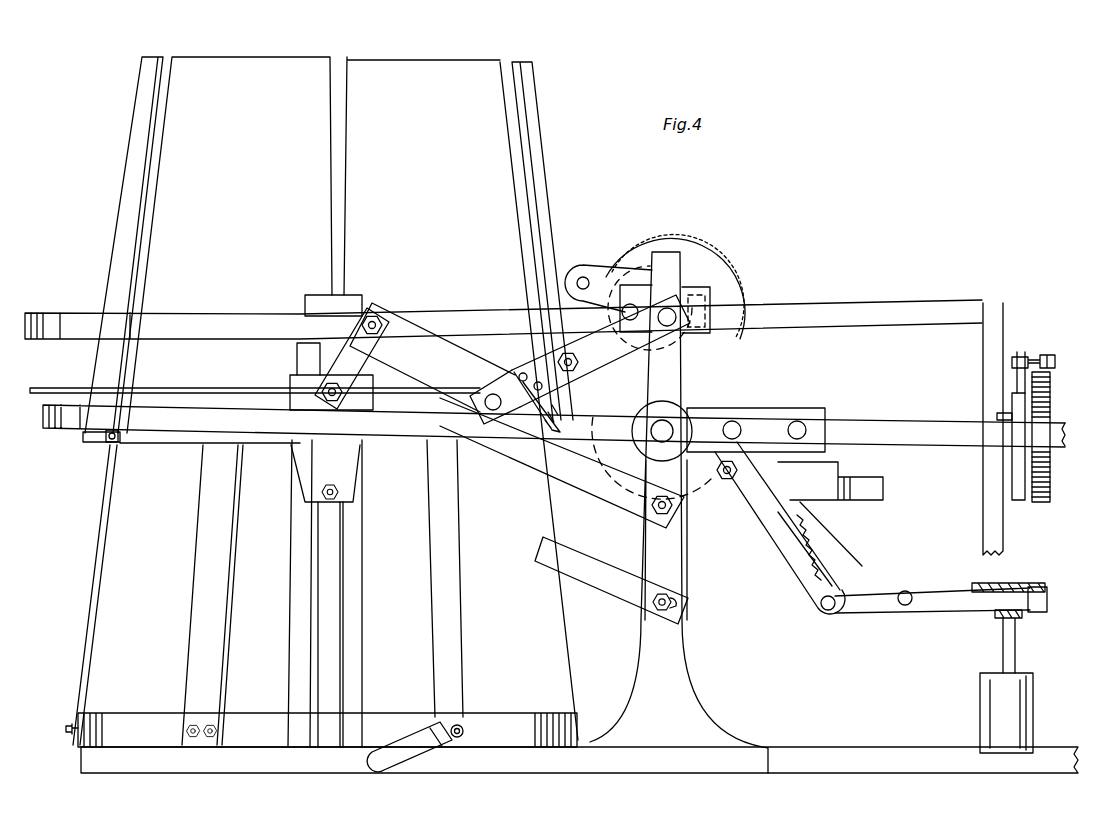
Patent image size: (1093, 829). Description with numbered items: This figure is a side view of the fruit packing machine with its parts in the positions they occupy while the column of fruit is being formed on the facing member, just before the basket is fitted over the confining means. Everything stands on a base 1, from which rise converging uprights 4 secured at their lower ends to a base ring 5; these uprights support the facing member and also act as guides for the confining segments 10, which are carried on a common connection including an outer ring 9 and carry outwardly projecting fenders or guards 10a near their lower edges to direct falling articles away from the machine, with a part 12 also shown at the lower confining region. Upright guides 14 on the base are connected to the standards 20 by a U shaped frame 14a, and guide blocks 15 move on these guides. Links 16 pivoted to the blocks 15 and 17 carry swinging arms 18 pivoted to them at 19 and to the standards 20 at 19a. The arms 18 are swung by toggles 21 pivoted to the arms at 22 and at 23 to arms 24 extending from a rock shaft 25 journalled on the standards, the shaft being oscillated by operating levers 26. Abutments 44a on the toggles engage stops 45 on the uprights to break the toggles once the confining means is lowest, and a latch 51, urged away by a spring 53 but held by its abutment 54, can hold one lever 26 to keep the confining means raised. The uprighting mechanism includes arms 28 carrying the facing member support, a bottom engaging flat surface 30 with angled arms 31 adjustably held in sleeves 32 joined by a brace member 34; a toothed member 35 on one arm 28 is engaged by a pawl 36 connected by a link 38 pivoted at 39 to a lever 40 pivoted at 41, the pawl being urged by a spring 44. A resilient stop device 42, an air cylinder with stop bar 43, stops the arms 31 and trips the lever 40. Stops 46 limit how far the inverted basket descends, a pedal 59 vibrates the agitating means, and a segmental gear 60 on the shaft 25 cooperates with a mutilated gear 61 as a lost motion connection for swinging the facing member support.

The base 1 is at (508, 762).
The converging uprights 4 is at (100, 540).
The base ring 5 is at (150, 716).
The outer ring 9 is at (63, 426).
The confining segments 10 is at (143, 85).
The fenders or guards 10a is at (51, 388).
The clip 12 is at (108, 444).
The upright guides 14 is at (364, 610).
The U shaped frame 14a is at (205, 306).
The guide blocks 15 is at (300, 458).
The links 16 is at (330, 318).
The block 17 is at (288, 382).
The swinging arms 18 is at (478, 342).
The pivot 19 is at (380, 314).
The pivot 19a is at (687, 513).
The standards 20 is at (712, 312).
The toggles 21 is at (612, 314).
The pivot 22 is at (492, 428).
The pivot 23 is at (688, 288).
The arms 24 is at (718, 390).
The rock shaft 25 is at (660, 434).
The operating levers 26 is at (906, 420).
The arms 28 is at (594, 268).
The flat surface 30 is at (1020, 584).
The angled arms 31 is at (942, 612).
The sleeves 32 is at (760, 496).
The brace member 34 is at (884, 488).
The toothed member 35 is at (670, 228).
The pawl 36 is at (716, 408).
The link 38 is at (788, 567).
The pivot 39 is at (728, 480).
The lever 40 is at (852, 606).
The pivot 41 is at (906, 594).
The resilient stop device 42 is at (984, 716).
The stop bar 43 is at (1018, 618).
The spring 44 is at (808, 536).
The abutments 44a is at (544, 436).
The stops or abutments 45 is at (550, 562).
The stops 46 is at (352, 294).
The latch 51 is at (1020, 472).
The spring 53 is at (1052, 396).
The abutment 54 is at (992, 412).
The pedal 59 is at (418, 764).
The segmental gear 60 is at (602, 448).
The mutilated gear 61 is at (682, 278).